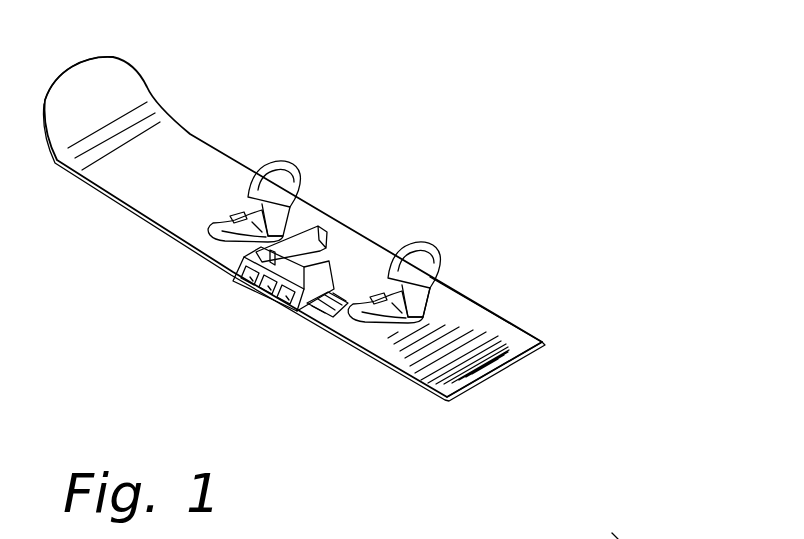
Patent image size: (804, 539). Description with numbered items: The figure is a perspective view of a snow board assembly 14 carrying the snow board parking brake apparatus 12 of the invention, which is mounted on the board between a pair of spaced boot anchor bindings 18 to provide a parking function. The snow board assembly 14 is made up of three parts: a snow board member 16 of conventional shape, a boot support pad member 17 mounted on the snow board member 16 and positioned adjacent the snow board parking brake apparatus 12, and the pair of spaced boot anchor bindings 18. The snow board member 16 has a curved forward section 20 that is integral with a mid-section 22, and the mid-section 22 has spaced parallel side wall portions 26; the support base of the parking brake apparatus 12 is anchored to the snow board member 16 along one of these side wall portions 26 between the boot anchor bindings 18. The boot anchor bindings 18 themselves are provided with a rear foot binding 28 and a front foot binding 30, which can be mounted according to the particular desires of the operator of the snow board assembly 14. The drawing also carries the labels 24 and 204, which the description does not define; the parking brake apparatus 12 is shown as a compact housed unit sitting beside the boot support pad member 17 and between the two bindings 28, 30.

The snow board parking brake apparatus 12 is at (277, 315).
The snow board assembly 14 is at (342, 218).
The snow board member 16 is at (485, 303).
The boot support pad member 17 is at (328, 335).
The boot anchor bindings 18 is at (409, 237).
The curved forward section 20 is at (90, 69).
The mid-section 22 is at (330, 250).
The tail of board 24 is at (530, 337).
The side wall portions 26 is at (197, 128).
The rear foot binding 28 is at (428, 277).
The front foot binding 30 is at (255, 168).
The component 204 is at (618, 538).